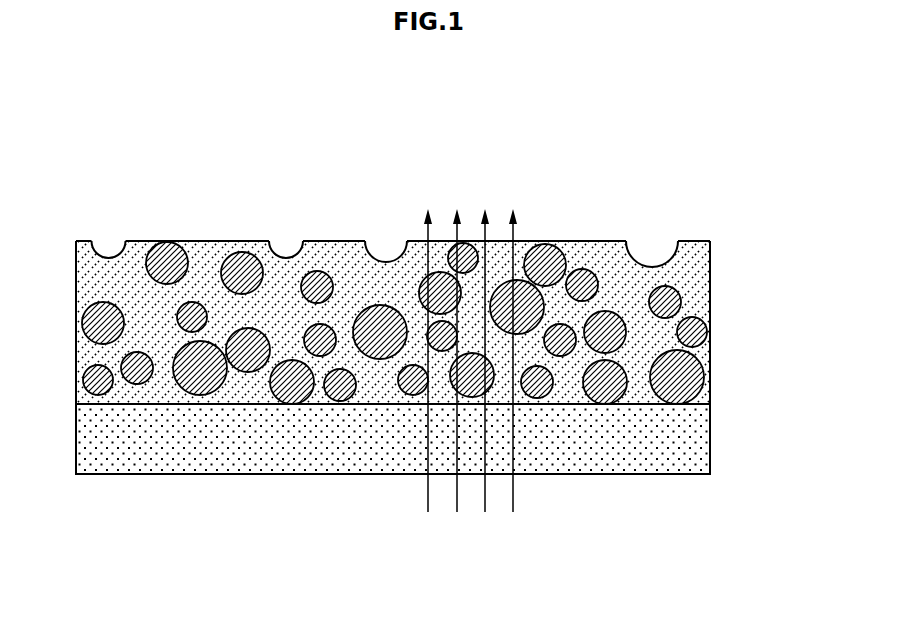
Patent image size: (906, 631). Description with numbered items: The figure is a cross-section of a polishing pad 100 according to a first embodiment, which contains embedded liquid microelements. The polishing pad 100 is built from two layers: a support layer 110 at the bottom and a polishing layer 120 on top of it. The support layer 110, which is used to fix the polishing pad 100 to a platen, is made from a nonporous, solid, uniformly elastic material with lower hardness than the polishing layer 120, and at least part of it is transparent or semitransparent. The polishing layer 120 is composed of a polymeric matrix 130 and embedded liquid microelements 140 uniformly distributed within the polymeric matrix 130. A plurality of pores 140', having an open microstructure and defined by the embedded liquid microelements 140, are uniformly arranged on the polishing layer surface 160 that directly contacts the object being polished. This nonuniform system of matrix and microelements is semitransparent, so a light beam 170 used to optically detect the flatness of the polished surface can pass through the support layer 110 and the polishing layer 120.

The polishing pad 100 is at (674, 120).
The support layer 110 is at (717, 406).
The polishing layer 120 is at (717, 242).
The polymeric matrix 130 is at (613, 280).
The embedded liquid microelements 140 is at (394, 296).
The pores 140' is at (385, 223).
The polishing layer surface 160 is at (338, 240).
The light beam 170 is at (513, 515).